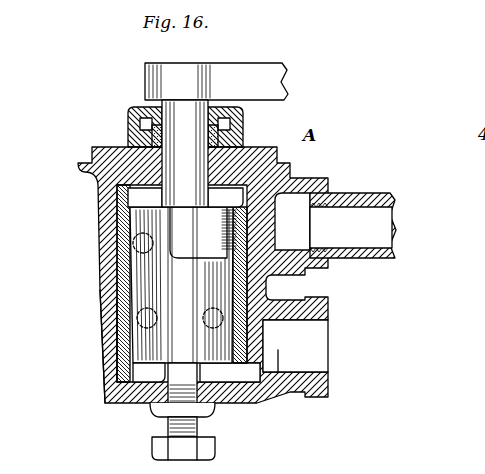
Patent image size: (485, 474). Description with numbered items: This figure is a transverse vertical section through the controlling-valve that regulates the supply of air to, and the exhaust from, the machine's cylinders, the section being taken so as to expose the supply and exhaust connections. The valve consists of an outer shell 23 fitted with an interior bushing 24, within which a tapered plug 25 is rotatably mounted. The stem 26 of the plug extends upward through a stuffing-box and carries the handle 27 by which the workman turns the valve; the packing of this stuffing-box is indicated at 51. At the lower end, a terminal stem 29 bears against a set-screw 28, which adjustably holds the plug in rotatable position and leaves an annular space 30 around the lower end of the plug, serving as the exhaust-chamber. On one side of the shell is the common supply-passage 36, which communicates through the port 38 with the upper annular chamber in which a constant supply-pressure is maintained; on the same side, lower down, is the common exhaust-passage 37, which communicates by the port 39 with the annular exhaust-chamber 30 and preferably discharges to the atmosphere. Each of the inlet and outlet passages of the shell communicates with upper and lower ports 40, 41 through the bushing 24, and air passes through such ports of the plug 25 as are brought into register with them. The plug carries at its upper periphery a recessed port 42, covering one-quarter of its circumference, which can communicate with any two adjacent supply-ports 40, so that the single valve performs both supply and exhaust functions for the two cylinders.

The outer shell 23 is at (108, 279).
The interior bushing 24 is at (102, 340).
The tapered plug 25 is at (181, 285).
The stem 26 is at (185, 139).
The handle 27 is at (213, 101).
The set-screw 28 is at (178, 404).
The terminal stem 29 is at (223, 372).
The annular space 30 is at (152, 378).
The common supply-passage 36 is at (326, 223).
The common exhaust-passage 37 is at (355, 352).
The port 38 is at (232, 203).
The port 39 is at (274, 356).
The upper port 40 is at (116, 238).
The lower port 41 is at (114, 364).
The recessed port 42 is at (203, 232).
The packing 51 is at (120, 147).